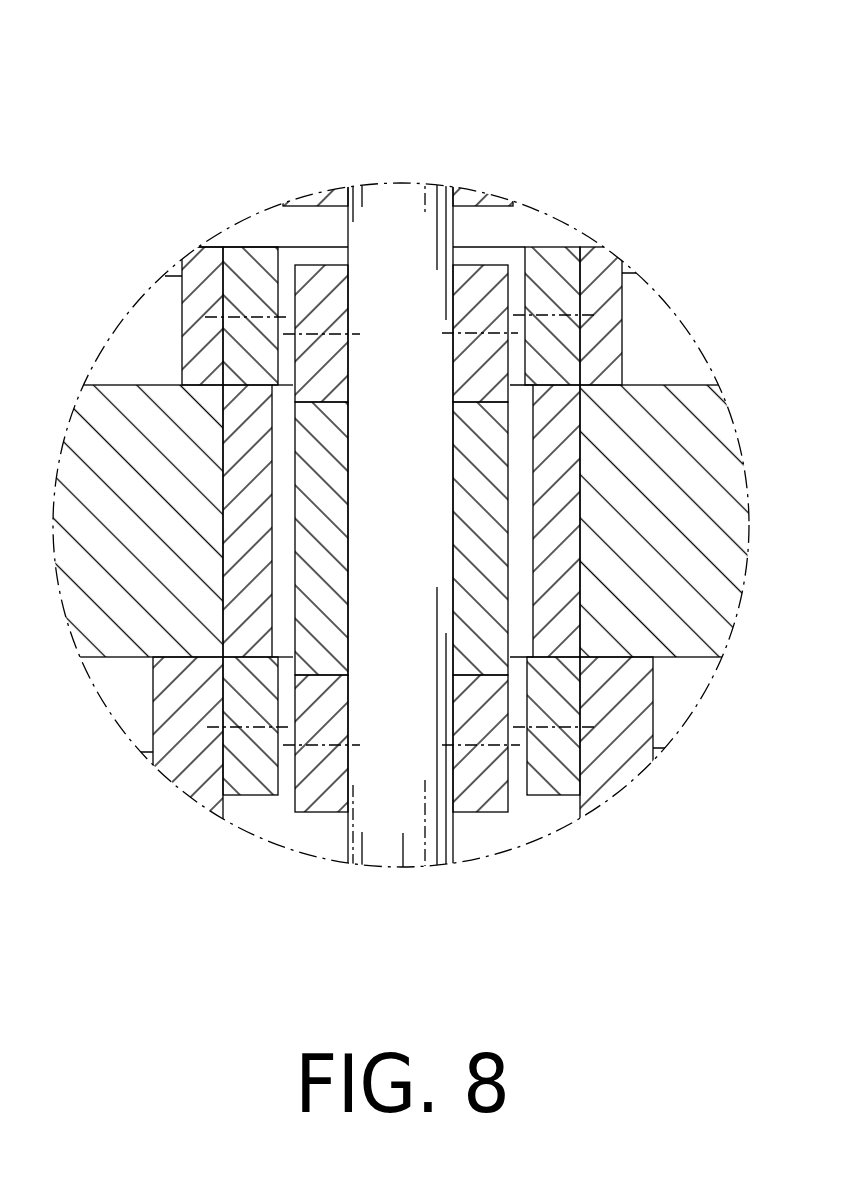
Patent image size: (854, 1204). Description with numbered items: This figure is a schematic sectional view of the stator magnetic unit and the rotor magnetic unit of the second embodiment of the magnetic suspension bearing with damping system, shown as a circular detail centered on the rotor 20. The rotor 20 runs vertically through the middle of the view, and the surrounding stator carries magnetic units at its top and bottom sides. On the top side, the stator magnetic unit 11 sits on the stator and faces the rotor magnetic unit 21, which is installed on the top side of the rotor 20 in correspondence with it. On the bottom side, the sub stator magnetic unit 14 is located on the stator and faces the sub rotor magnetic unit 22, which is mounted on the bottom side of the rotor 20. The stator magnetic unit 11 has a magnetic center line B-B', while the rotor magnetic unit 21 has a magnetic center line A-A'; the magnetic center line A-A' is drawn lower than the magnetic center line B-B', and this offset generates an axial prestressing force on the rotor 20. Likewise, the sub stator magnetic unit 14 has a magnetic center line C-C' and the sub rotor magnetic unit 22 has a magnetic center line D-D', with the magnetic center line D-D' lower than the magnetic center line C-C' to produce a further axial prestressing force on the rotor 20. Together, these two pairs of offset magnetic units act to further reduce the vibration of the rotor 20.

The stator magnetic unit 11 is at (258, 285).
The sub stator magnetic unit 14 is at (222, 760).
The rotor 20 is at (401, 215).
The rotor magnetic unit 21 is at (318, 282).
The sub rotor magnetic unit 22 is at (327, 782).
The magnetic center line A-A' is at (529, 248).
The magnetic center line B-B' is at (632, 258).
The magnetic center line C-C' is at (628, 785).
The magnetic center line D-D' is at (529, 832).